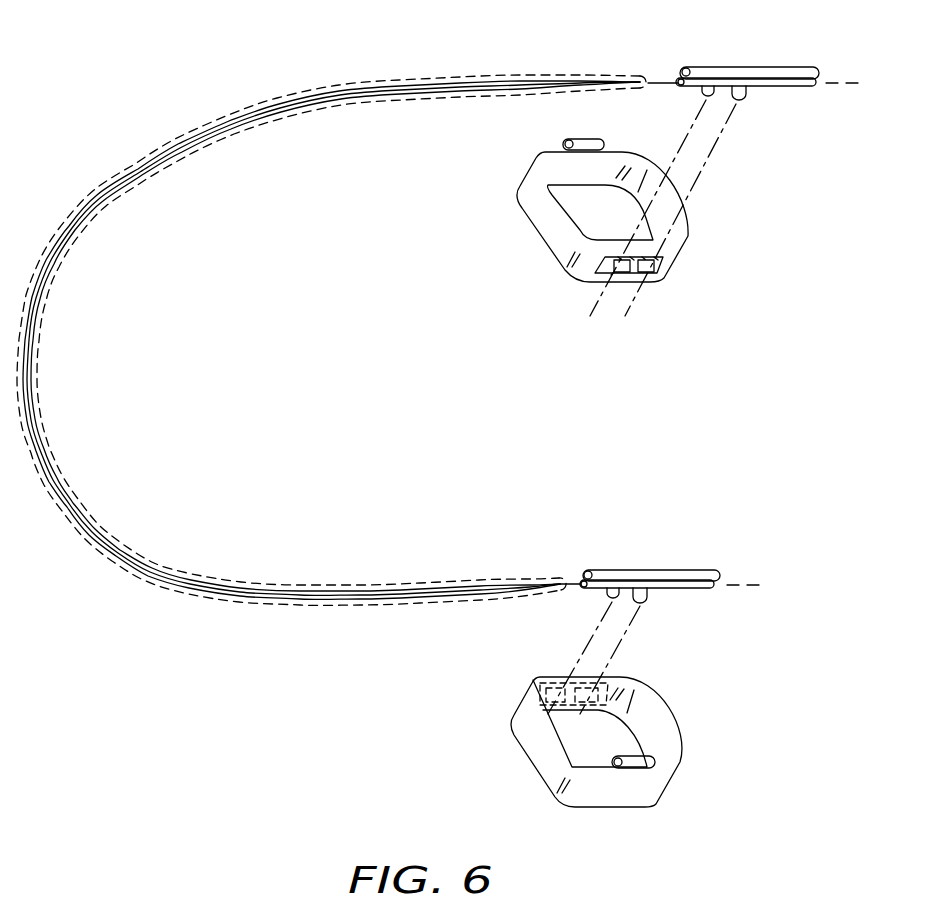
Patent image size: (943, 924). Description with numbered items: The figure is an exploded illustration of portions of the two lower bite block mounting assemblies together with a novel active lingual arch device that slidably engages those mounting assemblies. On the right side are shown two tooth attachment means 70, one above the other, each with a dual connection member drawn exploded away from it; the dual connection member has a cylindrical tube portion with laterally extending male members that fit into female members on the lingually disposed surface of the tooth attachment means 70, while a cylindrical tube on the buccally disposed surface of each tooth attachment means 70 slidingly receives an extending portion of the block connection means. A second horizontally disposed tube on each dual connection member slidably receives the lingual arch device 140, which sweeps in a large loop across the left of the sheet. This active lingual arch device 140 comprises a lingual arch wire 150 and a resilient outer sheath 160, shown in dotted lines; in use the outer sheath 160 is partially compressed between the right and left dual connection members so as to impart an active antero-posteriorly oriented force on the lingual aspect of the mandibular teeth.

The tooth attachment means 70 is at (624, 482).
The lingual arch device 140 is at (331, 340).
The lingual arch wire 150 is at (143, 155).
The resilient outer sheath 160 is at (88, 220).